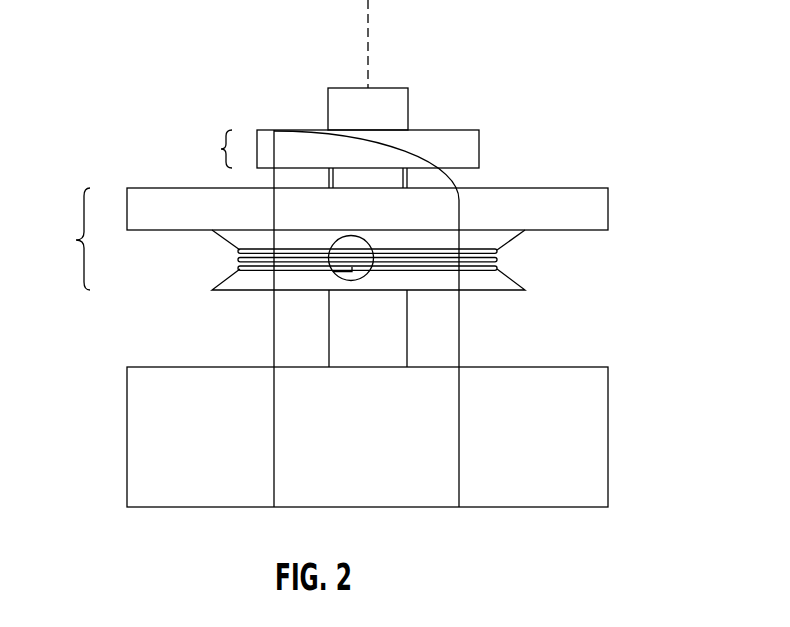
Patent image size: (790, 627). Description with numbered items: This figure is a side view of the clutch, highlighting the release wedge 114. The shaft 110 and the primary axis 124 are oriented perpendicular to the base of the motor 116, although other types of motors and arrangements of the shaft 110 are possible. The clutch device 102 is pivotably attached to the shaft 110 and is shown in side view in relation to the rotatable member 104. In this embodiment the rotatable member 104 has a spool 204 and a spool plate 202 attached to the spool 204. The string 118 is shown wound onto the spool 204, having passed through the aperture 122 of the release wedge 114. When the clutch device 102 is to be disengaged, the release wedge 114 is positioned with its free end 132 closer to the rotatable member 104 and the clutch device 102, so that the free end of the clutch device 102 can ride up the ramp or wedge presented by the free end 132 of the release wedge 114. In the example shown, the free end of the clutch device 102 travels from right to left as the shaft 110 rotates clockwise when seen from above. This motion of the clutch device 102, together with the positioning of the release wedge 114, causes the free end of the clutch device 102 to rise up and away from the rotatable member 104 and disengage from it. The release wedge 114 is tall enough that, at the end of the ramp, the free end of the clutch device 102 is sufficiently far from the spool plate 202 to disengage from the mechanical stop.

The clutch device 102 is at (480, 148).
The rotatable member 104 is at (61, 239).
The shaft 110 is at (408, 108).
The release wedge 114 is at (293, 145).
The motor 116 is at (610, 438).
The string 118 is at (497, 257).
The aperture 122 is at (333, 275).
The primary axis 124 is at (368, 40).
The free end of the release wedge 132 is at (206, 149).
The spool plate 202 is at (195, 187).
The spool 204 is at (264, 293).